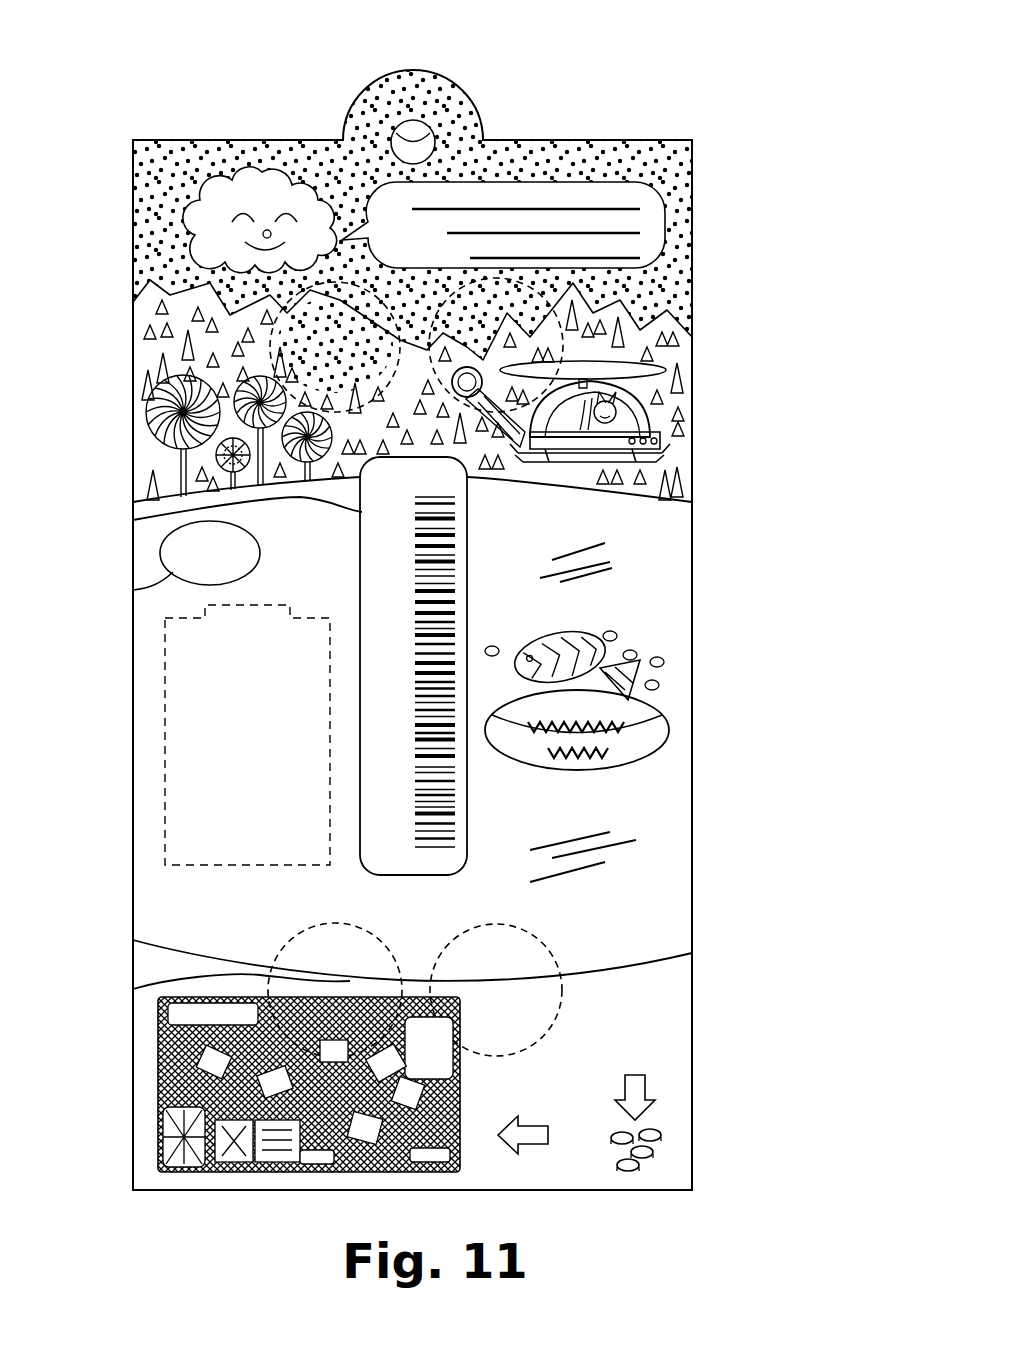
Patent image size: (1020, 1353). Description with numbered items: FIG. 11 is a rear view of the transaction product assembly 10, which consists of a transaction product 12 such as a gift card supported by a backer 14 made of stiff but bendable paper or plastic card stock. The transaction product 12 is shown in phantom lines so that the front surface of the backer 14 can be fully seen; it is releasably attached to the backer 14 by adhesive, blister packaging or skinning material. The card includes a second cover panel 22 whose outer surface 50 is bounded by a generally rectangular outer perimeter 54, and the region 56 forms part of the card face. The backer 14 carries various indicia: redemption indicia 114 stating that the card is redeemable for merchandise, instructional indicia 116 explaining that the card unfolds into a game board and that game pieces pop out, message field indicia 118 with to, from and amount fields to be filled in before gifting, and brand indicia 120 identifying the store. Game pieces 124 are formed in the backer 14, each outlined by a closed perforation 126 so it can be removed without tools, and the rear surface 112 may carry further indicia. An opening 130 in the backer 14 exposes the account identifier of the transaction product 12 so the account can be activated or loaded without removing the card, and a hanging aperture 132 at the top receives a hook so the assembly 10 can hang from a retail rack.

The transaction product assembly 10 is at (128, 48).
The transaction product 12 is at (437, 481).
The backer 14 is at (657, 625).
The second cover panel 22 is at (448, 868).
The outer surface 50 is at (457, 852).
The outer perimeter 54 is at (453, 802).
The band region 56 is at (133, 520).
The rear surface 112 is at (665, 1072).
The redemption indicia 114 is at (165, 770).
The instructional indicia 116 is at (665, 1013).
The message field indicia 118 is at (400, 200).
The brand indicia 120 is at (133, 590).
The game pieces 124 is at (270, 373).
The perforation 126 is at (133, 989).
The opening 130 is at (460, 582).
The hanging aperture 132 is at (422, 136).